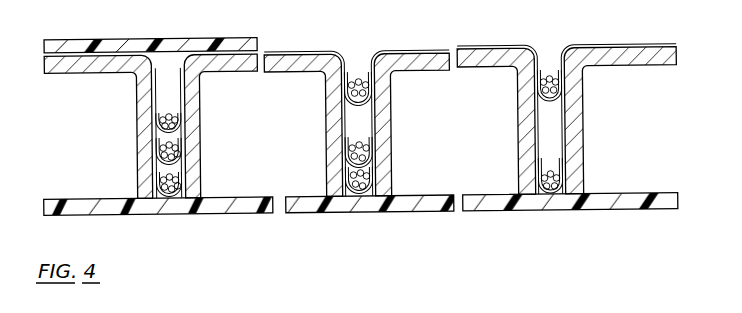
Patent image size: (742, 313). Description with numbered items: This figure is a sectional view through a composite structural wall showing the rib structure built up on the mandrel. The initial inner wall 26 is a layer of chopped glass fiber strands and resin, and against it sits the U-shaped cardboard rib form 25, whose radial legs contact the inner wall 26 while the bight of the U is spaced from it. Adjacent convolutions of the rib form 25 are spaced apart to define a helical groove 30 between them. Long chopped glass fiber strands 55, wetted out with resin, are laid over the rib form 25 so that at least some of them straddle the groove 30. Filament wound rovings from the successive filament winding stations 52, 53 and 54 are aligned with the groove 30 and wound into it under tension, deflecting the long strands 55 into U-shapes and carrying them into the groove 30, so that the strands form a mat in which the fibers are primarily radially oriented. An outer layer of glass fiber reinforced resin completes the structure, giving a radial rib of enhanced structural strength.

The rib form 25 is at (593, 130).
The inner wall 26 is at (470, 218).
The helical groove 30 is at (168, 80).
The filament winding station 52 is at (167, 174).
The filament winding station 53 is at (168, 150).
The filament winding station 54 is at (178, 106).
The long strands 55 is at (345, 128).